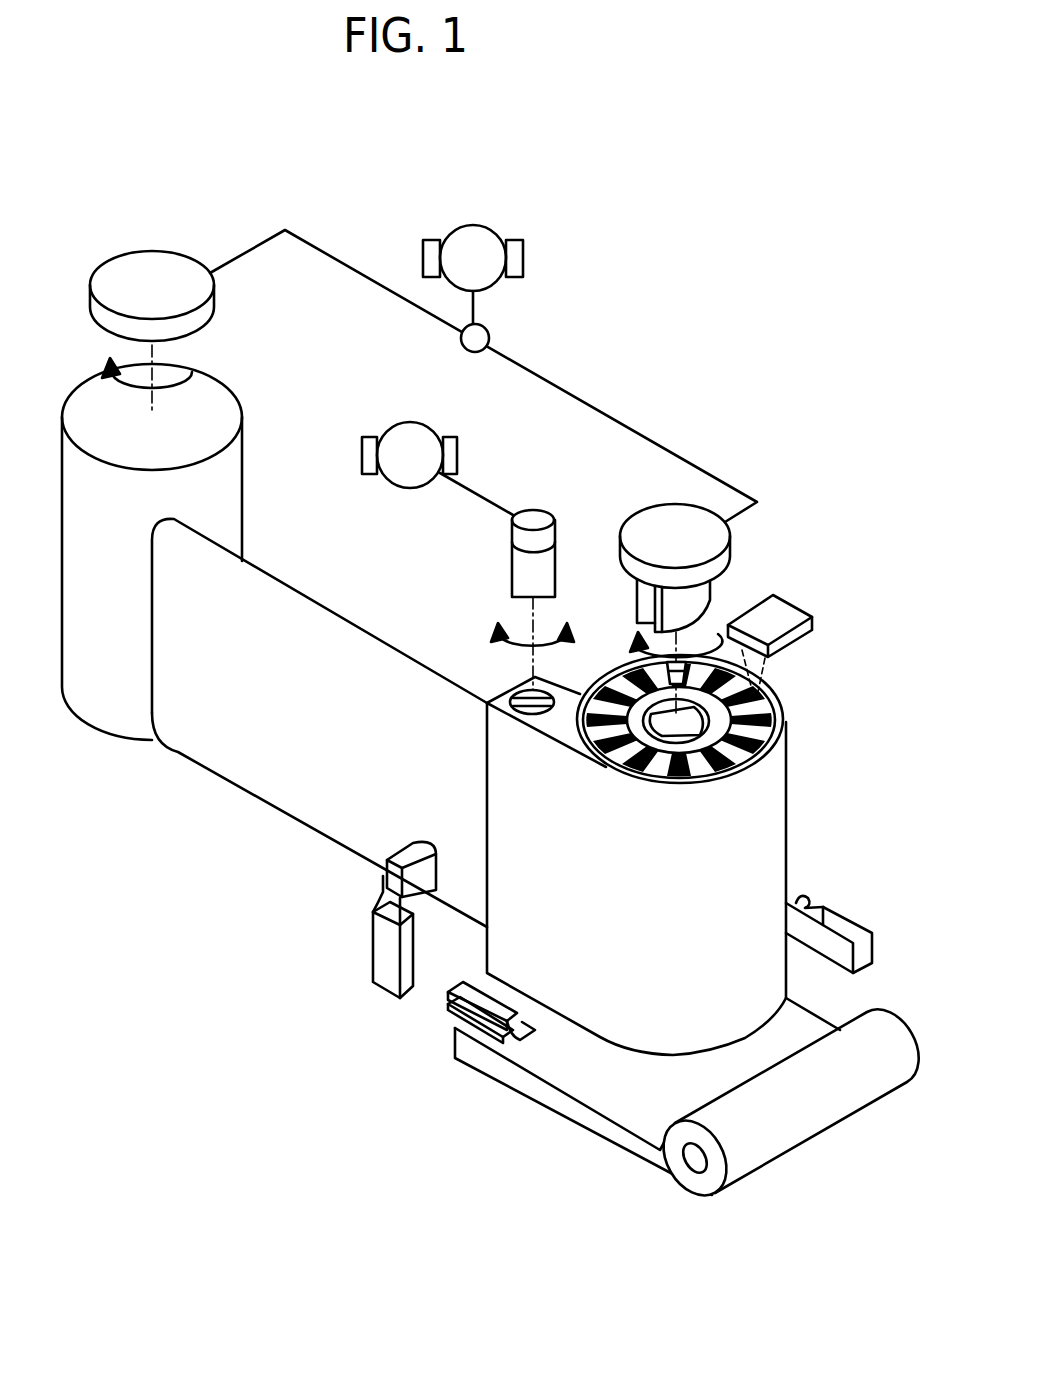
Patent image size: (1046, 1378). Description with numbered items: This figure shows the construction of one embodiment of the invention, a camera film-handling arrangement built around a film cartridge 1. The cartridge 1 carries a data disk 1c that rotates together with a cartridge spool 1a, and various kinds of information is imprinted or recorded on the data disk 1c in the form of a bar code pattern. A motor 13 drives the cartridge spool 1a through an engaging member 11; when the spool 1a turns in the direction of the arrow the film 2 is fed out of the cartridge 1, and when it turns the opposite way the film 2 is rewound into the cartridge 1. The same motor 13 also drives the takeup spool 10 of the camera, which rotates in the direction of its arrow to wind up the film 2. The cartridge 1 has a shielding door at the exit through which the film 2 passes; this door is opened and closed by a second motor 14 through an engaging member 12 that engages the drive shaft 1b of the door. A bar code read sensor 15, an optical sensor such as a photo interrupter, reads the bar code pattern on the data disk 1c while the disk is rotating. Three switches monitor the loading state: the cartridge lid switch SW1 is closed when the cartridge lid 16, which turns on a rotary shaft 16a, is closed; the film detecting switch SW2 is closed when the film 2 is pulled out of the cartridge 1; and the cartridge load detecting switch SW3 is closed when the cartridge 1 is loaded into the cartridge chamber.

The film cartridge 1 is at (676, 855).
The cartridge spool 1a is at (683, 723).
The drive shaft 1b is at (542, 713).
The data disk 1c is at (648, 767).
The film 2 is at (278, 793).
The takeup spool 10 is at (103, 677).
The engaging member 11 is at (710, 603).
The engaging member 12 is at (520, 578).
The motor 13 is at (523, 258).
The motor 14 is at (457, 455).
The bar code read sensor 15 is at (812, 617).
The cartridge lid 16 is at (687, 1148).
The rotary shaft 16a is at (693, 1168).
The cartridge lid switch SW1 is at (448, 1005).
The film detecting switch SW2 is at (373, 948).
The cartridge load detecting switch SW3 is at (855, 920).